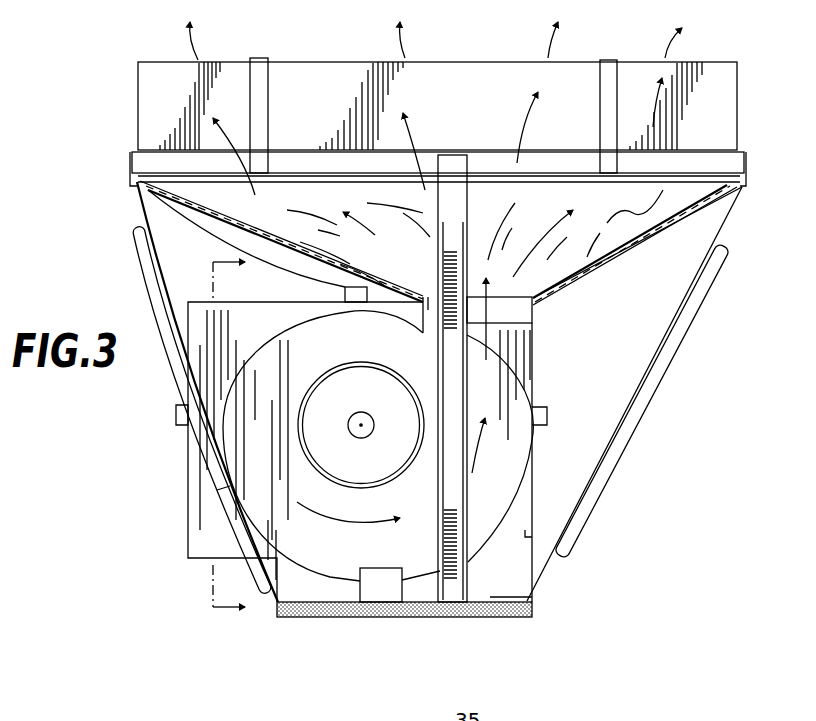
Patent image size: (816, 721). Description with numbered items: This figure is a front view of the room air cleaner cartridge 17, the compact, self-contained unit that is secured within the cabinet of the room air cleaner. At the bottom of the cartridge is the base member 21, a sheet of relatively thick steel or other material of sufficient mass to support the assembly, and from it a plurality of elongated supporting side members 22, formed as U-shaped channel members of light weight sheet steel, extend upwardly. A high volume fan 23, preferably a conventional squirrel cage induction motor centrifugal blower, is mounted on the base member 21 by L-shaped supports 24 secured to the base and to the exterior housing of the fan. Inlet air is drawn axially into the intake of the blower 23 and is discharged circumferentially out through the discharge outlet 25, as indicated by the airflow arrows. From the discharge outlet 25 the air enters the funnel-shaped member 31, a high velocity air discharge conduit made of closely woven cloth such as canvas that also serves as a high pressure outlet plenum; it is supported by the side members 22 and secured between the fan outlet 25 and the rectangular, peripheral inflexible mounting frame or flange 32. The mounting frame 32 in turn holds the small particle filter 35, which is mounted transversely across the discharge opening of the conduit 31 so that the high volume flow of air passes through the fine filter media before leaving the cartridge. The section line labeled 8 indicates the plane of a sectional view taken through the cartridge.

The small particle filter 35 is at (152, 103).
The mounting frame or flange 32 is at (728, 164).
The elongated supporting side members 22 is at (157, 282).
The room air cleaner cartridge 17 is at (588, 378).
The funnel-shaped member 31 is at (605, 225).
The discharge outlet 25 is at (518, 317).
The high volume fan 23 is at (360, 350).
The base member 21 is at (318, 592).
The L-shaped supports 24 is at (380, 590).
The section line 8- 8 is at (238, 444).